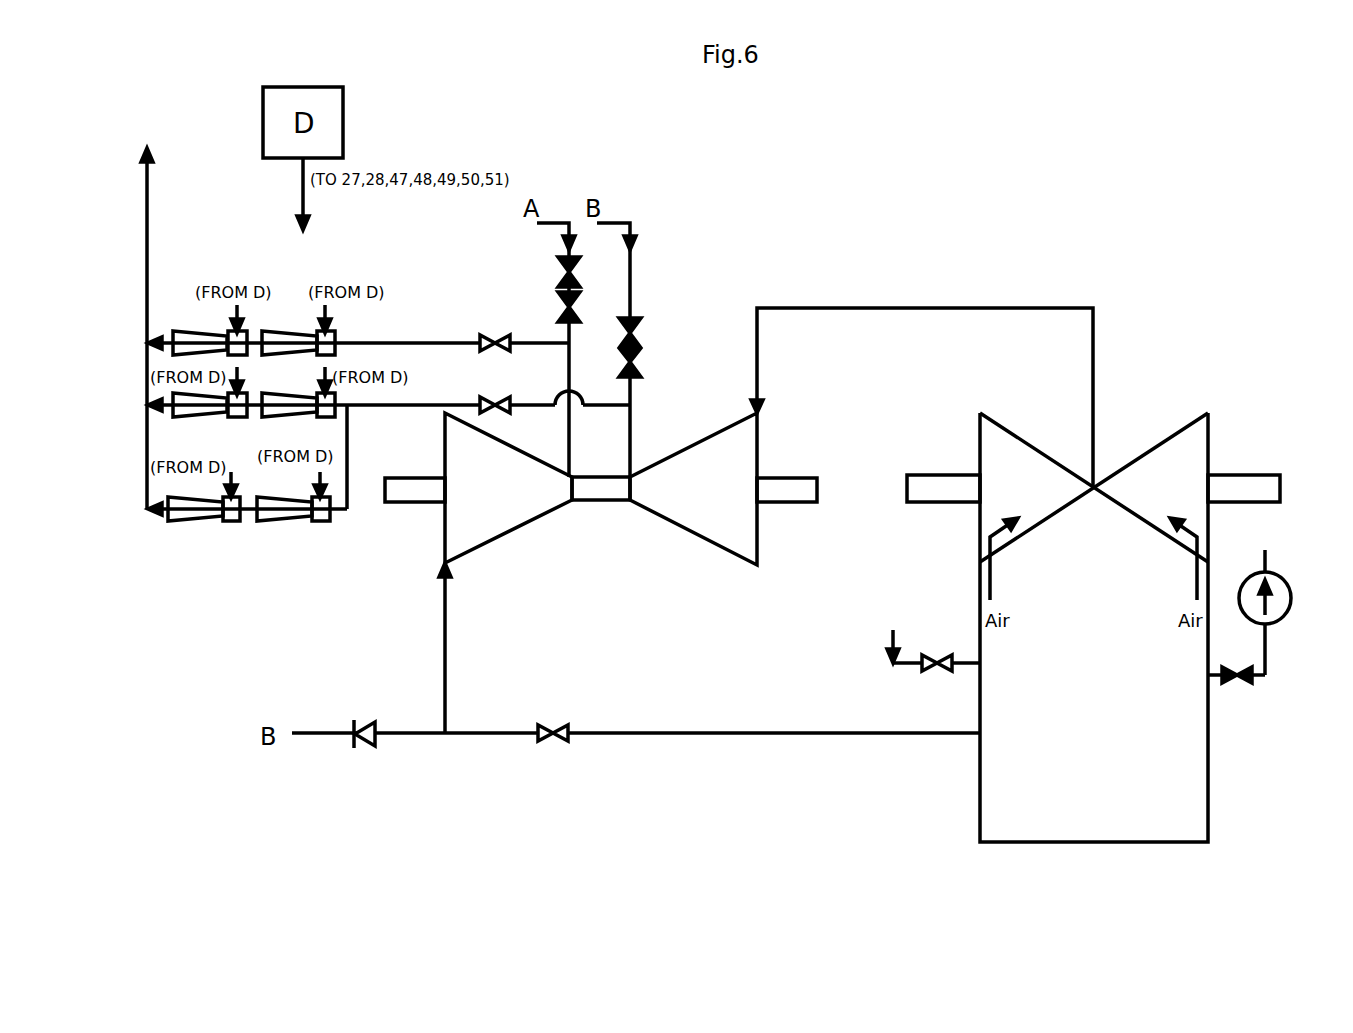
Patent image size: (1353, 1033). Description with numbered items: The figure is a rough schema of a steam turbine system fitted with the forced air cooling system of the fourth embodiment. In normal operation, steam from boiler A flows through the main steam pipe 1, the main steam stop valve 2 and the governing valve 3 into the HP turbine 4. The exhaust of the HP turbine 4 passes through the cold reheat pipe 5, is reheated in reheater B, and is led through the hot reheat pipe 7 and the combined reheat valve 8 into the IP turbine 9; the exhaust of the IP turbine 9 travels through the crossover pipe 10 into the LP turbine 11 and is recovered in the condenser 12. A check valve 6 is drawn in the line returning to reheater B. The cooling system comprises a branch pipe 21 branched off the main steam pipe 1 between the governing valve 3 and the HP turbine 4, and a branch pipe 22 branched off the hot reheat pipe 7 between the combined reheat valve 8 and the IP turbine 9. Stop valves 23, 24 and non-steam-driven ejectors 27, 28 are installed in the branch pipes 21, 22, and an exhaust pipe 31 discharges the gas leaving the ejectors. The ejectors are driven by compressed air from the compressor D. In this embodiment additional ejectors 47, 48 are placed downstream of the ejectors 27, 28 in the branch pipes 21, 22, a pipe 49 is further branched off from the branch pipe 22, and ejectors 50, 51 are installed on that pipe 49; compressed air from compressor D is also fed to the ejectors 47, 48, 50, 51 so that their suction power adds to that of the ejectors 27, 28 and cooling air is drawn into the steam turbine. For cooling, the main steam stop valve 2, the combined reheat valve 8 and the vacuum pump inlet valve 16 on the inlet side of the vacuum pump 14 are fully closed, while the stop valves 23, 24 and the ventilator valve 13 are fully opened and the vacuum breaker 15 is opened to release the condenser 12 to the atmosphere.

The main steam pipe 1 is at (566, 247).
The main steam stop valve 2 is at (560, 272).
The governing valve 3 is at (560, 307).
The HP turbine 4 is at (527, 520).
The cold reheat pipe 5 is at (447, 640).
The check valve 6 is at (372, 744).
The hot reheat pipe 7 is at (632, 300).
The combined reheat valve 8 is at (641, 340).
The IP turbine 9 is at (690, 530).
The crossover pipe 10 is at (843, 308).
The LP turbine 11 is at (1025, 535).
The condenser 12 is at (982, 690).
The ventilator valve 13 is at (565, 742).
The vacuum pump 14 is at (1292, 612).
The vacuum breaker 15 is at (935, 672).
The vacuum pump inlet valve 16 is at (1245, 683).
The branch pipe 21 is at (433, 335).
The branch pipe 22 is at (412, 401).
The stop valve 23 is at (495, 335).
The stop valve 24 is at (497, 400).
The ejector 27 is at (313, 333).
The ejector 28 is at (310, 418).
The exhaust pipe 31 is at (150, 240).
The ejector 47 is at (190, 333).
The ejector 48 is at (210, 418).
The pipe 49 is at (333, 518).
The ejector 50 is at (308, 520).
The ejector 51 is at (228, 520).